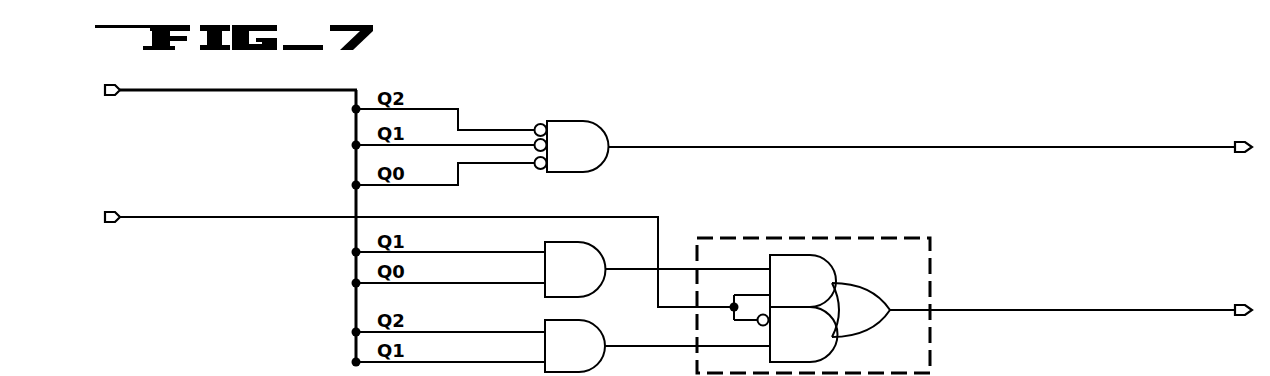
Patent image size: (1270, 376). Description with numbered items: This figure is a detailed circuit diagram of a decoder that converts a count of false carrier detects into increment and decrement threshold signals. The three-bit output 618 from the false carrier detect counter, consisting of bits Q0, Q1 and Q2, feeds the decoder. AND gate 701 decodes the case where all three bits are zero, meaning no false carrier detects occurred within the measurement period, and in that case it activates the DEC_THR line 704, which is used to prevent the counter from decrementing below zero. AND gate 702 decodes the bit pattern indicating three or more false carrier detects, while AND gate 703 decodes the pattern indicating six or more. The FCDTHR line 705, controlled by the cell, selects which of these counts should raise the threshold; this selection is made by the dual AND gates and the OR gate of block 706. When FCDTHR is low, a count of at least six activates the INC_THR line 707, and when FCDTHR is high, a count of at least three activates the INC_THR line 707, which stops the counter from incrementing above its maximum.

The output from false carrier detect counter 618 is at (170, 88).
The AND gate 701 is at (590, 157).
The AND gate 702 is at (588, 279).
The AND gate 703 is at (588, 356).
The DEC_THR line 704 is at (695, 146).
The FCDTHR line 705 is at (247, 215).
The block of dual AND gates and OR gate 706 is at (934, 245).
The INC_THR line 707 is at (1005, 308).